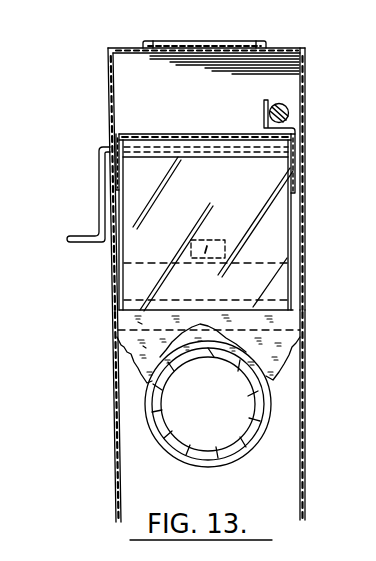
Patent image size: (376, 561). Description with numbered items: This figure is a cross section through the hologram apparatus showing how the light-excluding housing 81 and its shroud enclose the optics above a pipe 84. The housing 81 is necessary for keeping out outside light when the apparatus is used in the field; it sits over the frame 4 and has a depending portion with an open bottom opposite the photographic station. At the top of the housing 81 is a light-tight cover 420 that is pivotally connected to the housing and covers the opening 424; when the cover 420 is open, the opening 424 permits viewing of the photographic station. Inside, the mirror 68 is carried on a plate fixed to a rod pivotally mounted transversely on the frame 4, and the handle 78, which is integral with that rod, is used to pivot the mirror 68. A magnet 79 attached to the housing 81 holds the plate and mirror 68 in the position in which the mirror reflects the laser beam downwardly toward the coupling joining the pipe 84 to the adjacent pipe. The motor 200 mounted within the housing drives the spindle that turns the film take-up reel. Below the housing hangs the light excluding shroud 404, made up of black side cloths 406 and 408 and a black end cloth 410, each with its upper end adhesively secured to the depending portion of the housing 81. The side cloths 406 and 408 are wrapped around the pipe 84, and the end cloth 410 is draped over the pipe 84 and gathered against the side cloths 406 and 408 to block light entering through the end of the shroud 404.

The frame 4 is at (174, 134).
The mirror 68 is at (224, 205).
The handle 78 is at (99, 195).
The magnet 79 is at (211, 240).
The housing 81 is at (108, 90).
The pipe 84 is at (237, 443).
The motor 200 is at (289, 114).
The light excluding shroud 404 is at (191, 416).
The side cloth 406 is at (118, 474).
The side cloth 408 is at (305, 472).
The end cloth 410 is at (287, 339).
The light-tight cover 420 is at (205, 41).
The opening 424 is at (196, 56).